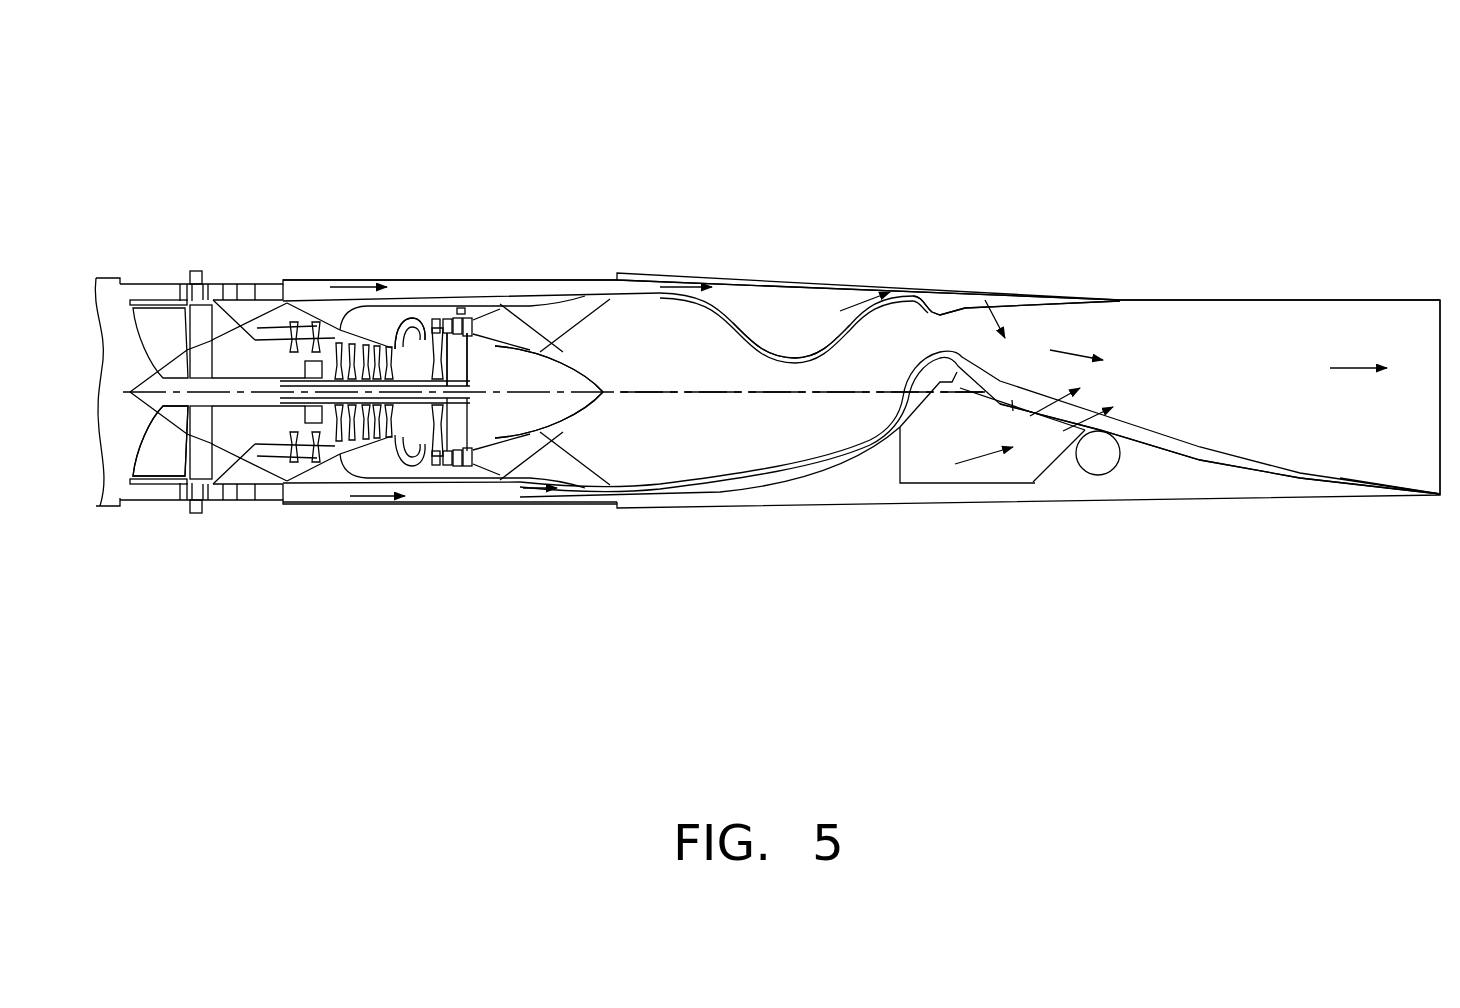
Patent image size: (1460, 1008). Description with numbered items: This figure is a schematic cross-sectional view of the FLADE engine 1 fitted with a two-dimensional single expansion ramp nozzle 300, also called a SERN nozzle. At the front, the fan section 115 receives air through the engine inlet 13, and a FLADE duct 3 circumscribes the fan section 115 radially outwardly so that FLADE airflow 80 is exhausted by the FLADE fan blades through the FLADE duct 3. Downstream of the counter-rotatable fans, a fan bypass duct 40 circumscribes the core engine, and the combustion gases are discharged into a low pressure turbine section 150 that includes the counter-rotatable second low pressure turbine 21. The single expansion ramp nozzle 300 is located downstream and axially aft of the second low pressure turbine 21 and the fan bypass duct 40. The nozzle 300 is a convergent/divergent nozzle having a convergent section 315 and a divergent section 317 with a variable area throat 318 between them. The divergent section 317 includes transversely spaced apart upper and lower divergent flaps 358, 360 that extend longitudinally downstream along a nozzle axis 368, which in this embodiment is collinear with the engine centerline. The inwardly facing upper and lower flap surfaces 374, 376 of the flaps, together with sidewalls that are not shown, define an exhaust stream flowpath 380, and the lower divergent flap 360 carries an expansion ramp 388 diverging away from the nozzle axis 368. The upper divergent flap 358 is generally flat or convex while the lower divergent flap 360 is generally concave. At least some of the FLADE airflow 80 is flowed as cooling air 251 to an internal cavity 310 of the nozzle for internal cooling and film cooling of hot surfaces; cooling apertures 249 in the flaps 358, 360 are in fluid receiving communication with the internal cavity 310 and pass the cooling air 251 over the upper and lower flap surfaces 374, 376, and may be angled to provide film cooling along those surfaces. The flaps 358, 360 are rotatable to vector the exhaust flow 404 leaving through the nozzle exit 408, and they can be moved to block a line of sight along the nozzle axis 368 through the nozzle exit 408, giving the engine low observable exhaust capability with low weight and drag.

The FLADE engine 1 is at (732, 122).
The FLADE duct 3 is at (300, 287).
The engine inlet 13 is at (543, 377).
The second low pressure turbine 21 is at (473, 300).
The fan bypass duct 40 is at (453, 300).
The FLADE airflow 80 is at (350, 279).
The fan section 115 is at (175, 505).
The low pressure turbine section 150 is at (479, 352).
The cooling apertures 249 is at (1077, 305).
The cooling air 251 is at (680, 287).
The single expansion ramp nozzle 300 is at (750, 332).
The internal cavity 310 is at (812, 305).
The convergent section 315 is at (700, 445).
The divergent section 317 is at (1268, 375).
The variable area throat 318 is at (940, 332).
The upper divergent flap 358 is at (997, 306).
The lower divergent flap 360 is at (1143, 438).
The nozzle axis 368 is at (823, 394).
The upper flap surface 374 is at (1023, 311).
The lower flap surface 376 is at (1213, 454).
The exhaust stream flowpath 380 is at (1068, 352).
The expansion ramp 388 is at (1340, 478).
The exhaust flow 404 is at (1347, 368).
The nozzle exit 408 is at (1120, 340).